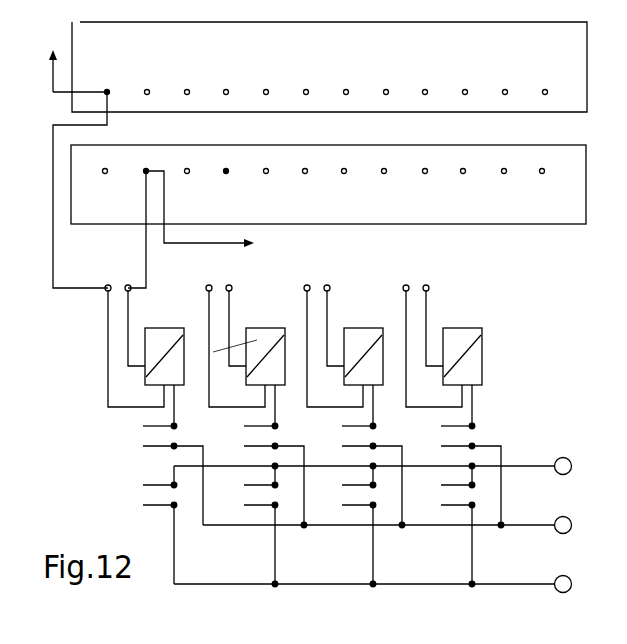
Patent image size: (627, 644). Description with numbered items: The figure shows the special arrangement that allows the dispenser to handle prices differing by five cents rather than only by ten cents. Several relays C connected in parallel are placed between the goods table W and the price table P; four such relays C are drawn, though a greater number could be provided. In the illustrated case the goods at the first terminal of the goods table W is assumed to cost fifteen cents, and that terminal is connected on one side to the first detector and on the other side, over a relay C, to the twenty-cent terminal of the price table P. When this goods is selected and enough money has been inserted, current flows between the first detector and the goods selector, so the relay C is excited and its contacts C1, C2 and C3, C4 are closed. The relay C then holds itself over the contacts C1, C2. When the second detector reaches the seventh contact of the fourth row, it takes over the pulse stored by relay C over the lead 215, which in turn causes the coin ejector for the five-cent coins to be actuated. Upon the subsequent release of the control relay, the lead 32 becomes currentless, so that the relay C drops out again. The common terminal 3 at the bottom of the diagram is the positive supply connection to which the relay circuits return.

The goods table W is at (577, 57).
The price table P is at (577, 173).
The relay C is at (267, 289).
The contact C1 is at (298, 427).
The contact C2 is at (312, 483).
The contact C3 is at (298, 479).
The contact C4 is at (298, 542).
The lead 215 is at (390, 467).
The lead 32 is at (400, 526).
The positive supply terminal 3 is at (381, 595).